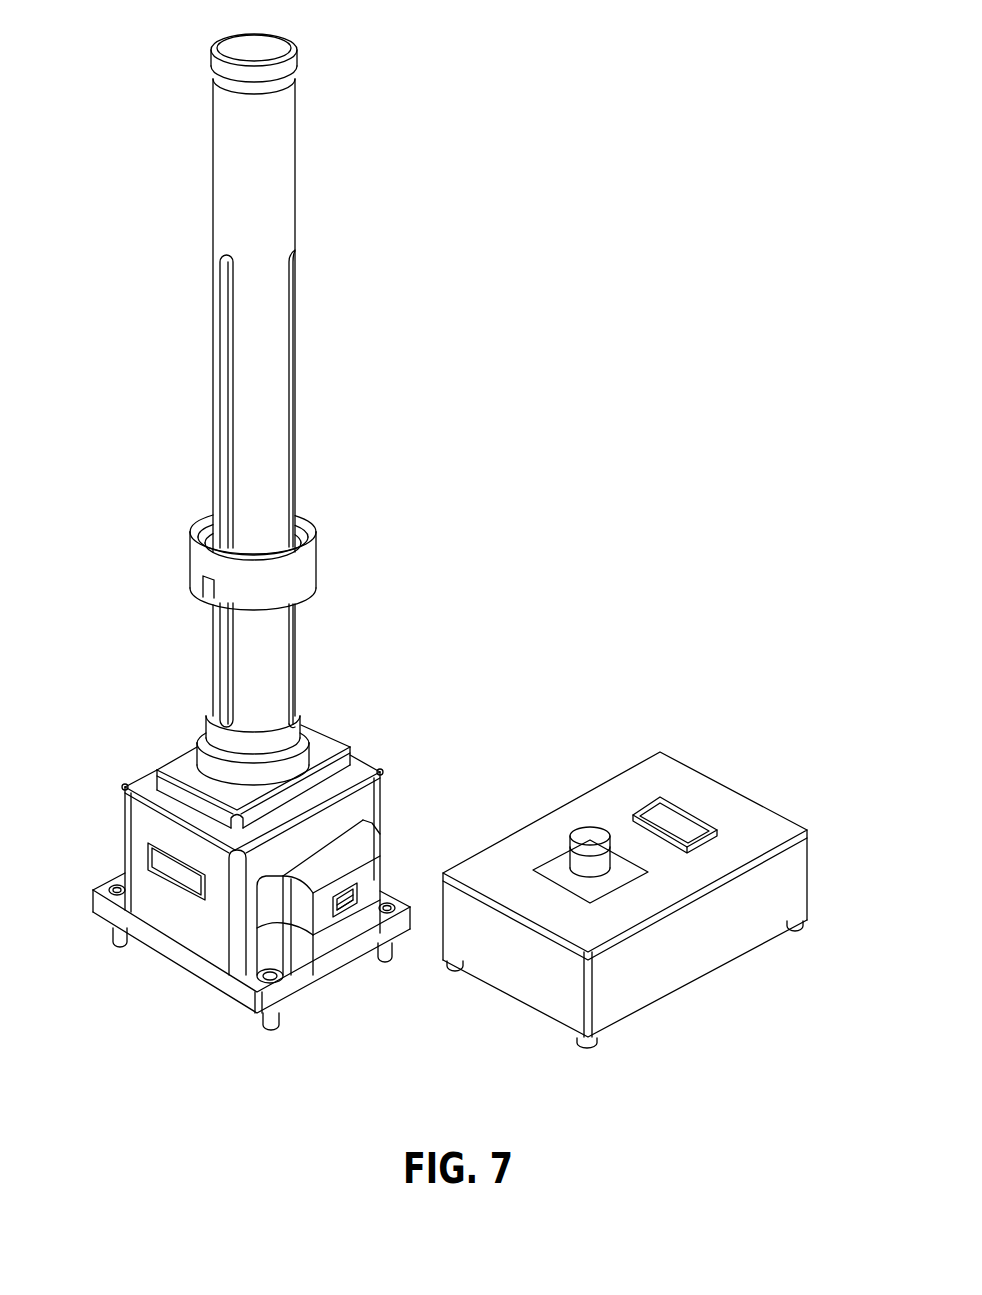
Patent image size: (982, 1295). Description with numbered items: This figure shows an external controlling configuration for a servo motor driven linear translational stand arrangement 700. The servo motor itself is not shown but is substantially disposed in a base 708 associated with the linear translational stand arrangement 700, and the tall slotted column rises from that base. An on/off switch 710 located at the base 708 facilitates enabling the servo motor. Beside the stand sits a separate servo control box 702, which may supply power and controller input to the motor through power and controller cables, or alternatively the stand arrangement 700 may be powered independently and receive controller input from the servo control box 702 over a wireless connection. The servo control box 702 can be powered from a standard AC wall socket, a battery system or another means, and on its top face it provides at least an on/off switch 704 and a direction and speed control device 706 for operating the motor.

The servo motor driven linear translational stand arrangement 700 is at (390, 151).
The servo control box 702 is at (815, 782).
The on/off switch 704 is at (673, 810).
The direction and speed control device 706 is at (587, 833).
The base 708 is at (193, 740).
The on/off switch 710 is at (130, 860).